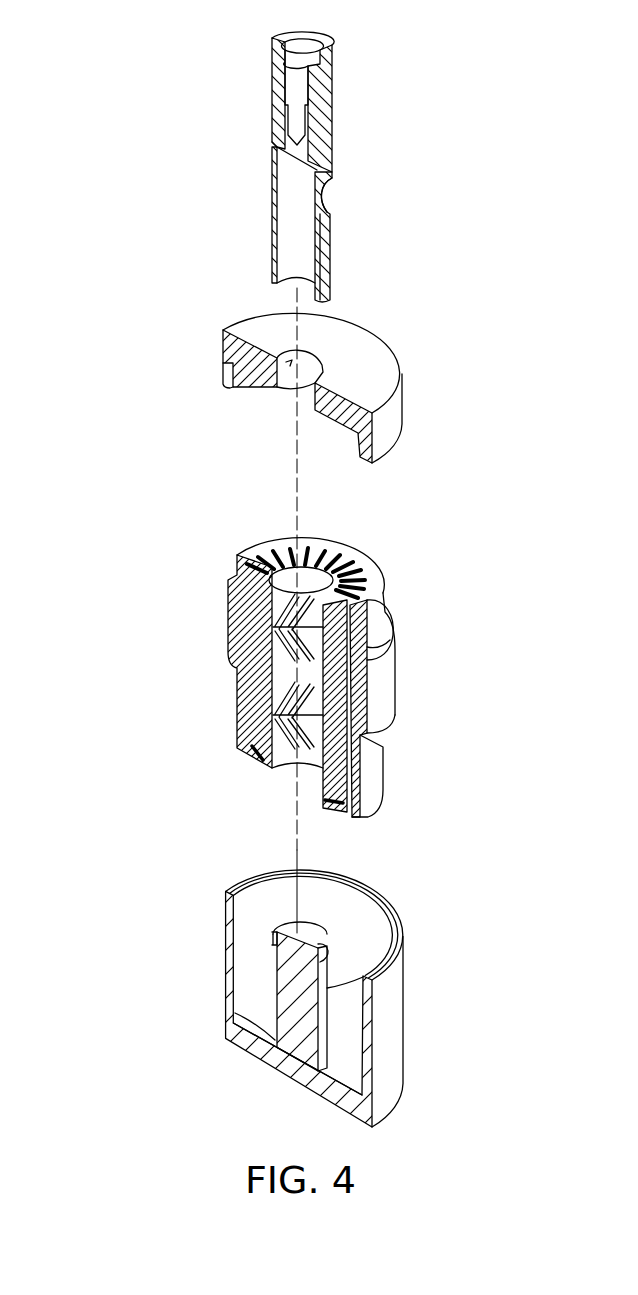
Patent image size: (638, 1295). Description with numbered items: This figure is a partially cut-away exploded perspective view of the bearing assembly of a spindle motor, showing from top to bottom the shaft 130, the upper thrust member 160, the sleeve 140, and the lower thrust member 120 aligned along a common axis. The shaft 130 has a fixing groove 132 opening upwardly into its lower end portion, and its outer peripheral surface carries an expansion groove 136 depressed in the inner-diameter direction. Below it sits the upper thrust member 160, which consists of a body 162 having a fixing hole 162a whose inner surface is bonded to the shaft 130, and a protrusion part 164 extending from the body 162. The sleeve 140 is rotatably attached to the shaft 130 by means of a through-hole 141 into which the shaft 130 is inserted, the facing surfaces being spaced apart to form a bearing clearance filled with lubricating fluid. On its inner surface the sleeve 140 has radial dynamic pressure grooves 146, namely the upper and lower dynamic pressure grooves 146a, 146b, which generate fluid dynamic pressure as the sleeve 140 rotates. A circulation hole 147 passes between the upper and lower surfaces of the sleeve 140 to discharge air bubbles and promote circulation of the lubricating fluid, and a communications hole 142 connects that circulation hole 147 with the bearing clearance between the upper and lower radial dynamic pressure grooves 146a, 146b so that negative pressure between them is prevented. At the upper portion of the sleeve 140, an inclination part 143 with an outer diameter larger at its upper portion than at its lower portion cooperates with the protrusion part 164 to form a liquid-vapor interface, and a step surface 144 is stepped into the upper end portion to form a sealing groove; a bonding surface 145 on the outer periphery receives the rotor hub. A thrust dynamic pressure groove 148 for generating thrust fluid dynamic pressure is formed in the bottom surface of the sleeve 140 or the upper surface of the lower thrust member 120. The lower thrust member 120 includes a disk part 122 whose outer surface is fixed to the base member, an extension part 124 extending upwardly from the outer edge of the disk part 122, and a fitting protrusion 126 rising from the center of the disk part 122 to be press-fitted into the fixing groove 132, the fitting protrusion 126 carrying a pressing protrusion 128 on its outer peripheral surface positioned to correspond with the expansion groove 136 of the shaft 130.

The lower thrust member 120 is at (277, 998).
The disk part 122 is at (297, 1022).
The extension part 124 is at (230, 958).
The fitting protrusion 126 is at (290, 1082).
The pressing protrusion 128 is at (320, 978).
The shaft 130 is at (284, 167).
The fixing groove 132 is at (295, 245).
The expansion groove 136 is at (322, 188).
The sleeve 140 is at (282, 664).
The through-hole 141 is at (318, 580).
The communications hole 142 is at (380, 722).
The inclination part 143 is at (372, 622).
The step surface 144 is at (375, 645).
The bonding surface 145 is at (385, 688).
The radial dynamic pressure grooves 146 is at (190, 671).
The upper radial dynamic pressure groove 146a is at (273, 620).
The lower radial dynamic pressure groove 146b is at (273, 708).
The circulation hole 147 is at (370, 755).
The thrust dynamic pressure groove 148 is at (357, 592).
The upper thrust member 160 is at (266, 372).
The body 162 is at (255, 360).
The fixing hole 162a is at (290, 362).
The protrusion part 164 is at (230, 377).